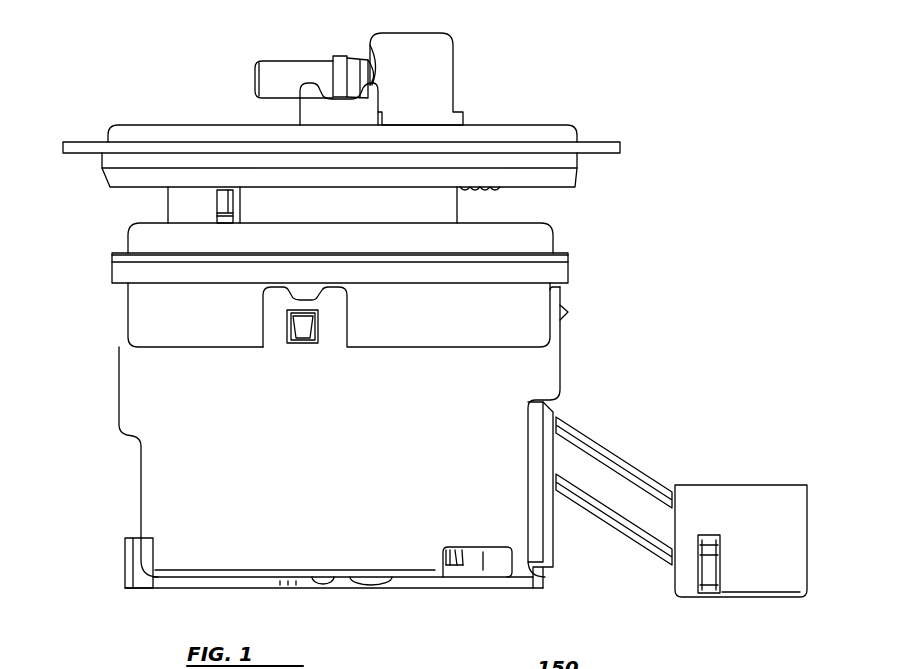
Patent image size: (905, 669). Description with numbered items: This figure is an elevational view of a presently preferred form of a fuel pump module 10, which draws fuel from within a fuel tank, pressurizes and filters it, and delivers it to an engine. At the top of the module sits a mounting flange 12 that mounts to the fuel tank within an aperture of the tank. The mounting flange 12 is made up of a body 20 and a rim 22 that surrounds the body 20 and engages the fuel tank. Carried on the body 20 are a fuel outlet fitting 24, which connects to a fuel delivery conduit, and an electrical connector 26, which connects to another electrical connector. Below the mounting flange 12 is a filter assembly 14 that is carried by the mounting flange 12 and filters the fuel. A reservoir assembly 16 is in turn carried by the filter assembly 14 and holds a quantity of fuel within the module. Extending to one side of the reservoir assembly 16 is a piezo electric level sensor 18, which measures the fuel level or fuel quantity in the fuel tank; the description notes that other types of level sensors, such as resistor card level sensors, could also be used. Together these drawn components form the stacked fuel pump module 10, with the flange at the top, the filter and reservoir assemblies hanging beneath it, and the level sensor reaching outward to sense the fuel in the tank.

The fuel pump module 10 is at (121, 36).
The mounting flange 12 is at (490, 102).
The filter assembly 14 is at (594, 275).
The reservoir assembly 16 is at (121, 508).
The piezo electric level sensor 18 is at (752, 462).
The body 20 is at (566, 124).
The rim 22 is at (620, 148).
The fuel outlet fitting 24 is at (426, 74).
The electrical connector 26 is at (322, 110).